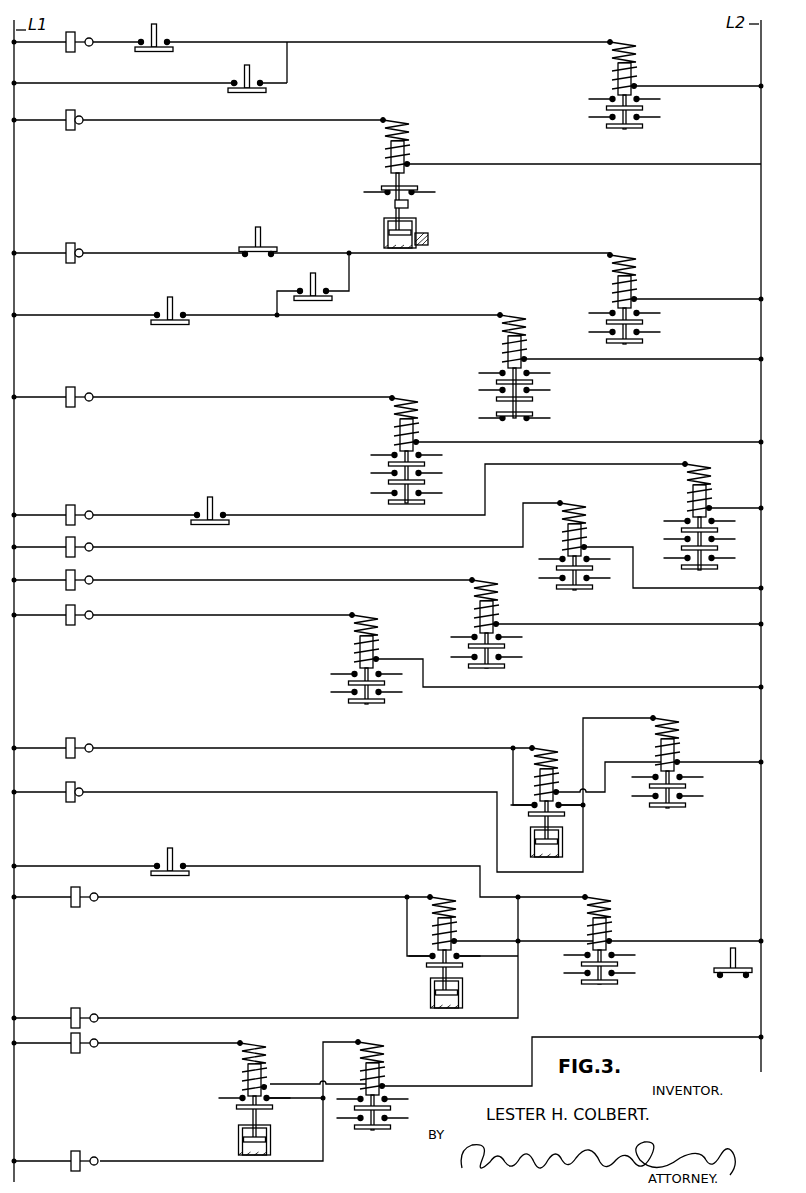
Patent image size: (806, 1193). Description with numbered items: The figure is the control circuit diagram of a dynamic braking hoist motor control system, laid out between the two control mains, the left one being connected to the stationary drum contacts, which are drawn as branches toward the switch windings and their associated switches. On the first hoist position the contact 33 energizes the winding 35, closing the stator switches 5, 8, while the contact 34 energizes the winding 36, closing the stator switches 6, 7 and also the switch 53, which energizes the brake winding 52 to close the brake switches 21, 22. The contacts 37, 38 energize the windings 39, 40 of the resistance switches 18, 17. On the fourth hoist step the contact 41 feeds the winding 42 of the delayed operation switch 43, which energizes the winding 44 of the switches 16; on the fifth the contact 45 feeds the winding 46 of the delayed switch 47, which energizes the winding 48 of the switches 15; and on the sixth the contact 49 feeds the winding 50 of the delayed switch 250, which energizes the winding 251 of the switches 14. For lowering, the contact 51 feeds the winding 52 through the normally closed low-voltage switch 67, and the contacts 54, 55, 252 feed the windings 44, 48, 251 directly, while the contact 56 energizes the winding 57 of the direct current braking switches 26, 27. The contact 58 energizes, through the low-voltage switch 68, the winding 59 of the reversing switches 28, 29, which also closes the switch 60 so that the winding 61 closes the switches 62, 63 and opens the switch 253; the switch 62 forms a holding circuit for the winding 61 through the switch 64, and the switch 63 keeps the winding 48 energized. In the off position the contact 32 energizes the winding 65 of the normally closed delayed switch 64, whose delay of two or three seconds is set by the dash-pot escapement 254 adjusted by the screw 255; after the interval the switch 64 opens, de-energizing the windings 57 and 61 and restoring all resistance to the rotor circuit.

The contact 51 is at (91, 38).
The switch 67 is at (166, 36).
The switch 53 is at (258, 80).
The contact 32 is at (82, 115).
The winding 65 is at (398, 126).
The winding 52 is at (636, 62).
The switch 21 is at (640, 100).
The switch 22 is at (640, 120).
The contact 56 is at (82, 248).
The switch 64 is at (256, 259).
The switch 62 is at (320, 286).
The switch 60 is at (180, 308).
The winding 57 is at (626, 258).
The switch 26 is at (640, 312).
The switch 27 is at (640, 332).
The winding 61 is at (520, 324).
The switch 63 is at (180, 860).
The switch 253 is at (722, 982).
The contact 34 is at (92, 392).
The winding 36 is at (402, 402).
The switch 6 is at (420, 458).
The switch 7 is at (420, 477).
The contact 58 is at (92, 511).
The switch 68 is at (220, 509).
The winding 59 is at (710, 472).
The switch 28 is at (706, 523).
The switch 29 is at (706, 543).
The contact 33 is at (92, 543).
The winding 35 is at (578, 511).
The switch 5 is at (590, 562).
The switch 8 is at (590, 580).
The contact 37 is at (92, 576).
The winding 39 is at (494, 591).
The electro-magnetic switch 18 is at (500, 640).
The contact 38 is at (92, 611).
The winding 40 is at (372, 625).
The electro-magnetic switch 17 is at (380, 677).
The contact 41 is at (92, 744).
The winding 42 is at (550, 757).
The delayed operation electro-magnetic switch 43 is at (540, 805).
The winding 44 is at (680, 726).
The switch 16 is at (682, 780).
The contact 54 is at (82, 786).
The contact 45 is at (98, 893).
The winding 46 is at (456, 920).
The delayed operation switch 47 is at (436, 952).
The winding 48 is at (606, 904).
The switch 15 is at (614, 957).
The contact 55 is at (98, 1013).
The contact 49 is at (98, 1039).
The winding 50 is at (262, 1046).
The delayed operation switch 250 is at (242, 1096).
The winding 251 is at (386, 1064).
The switch 14 is at (388, 1100).
The contact 252 is at (98, 1156).
The dash-pot escapement 254 is at (415, 222).
The screw 255 is at (429, 240).